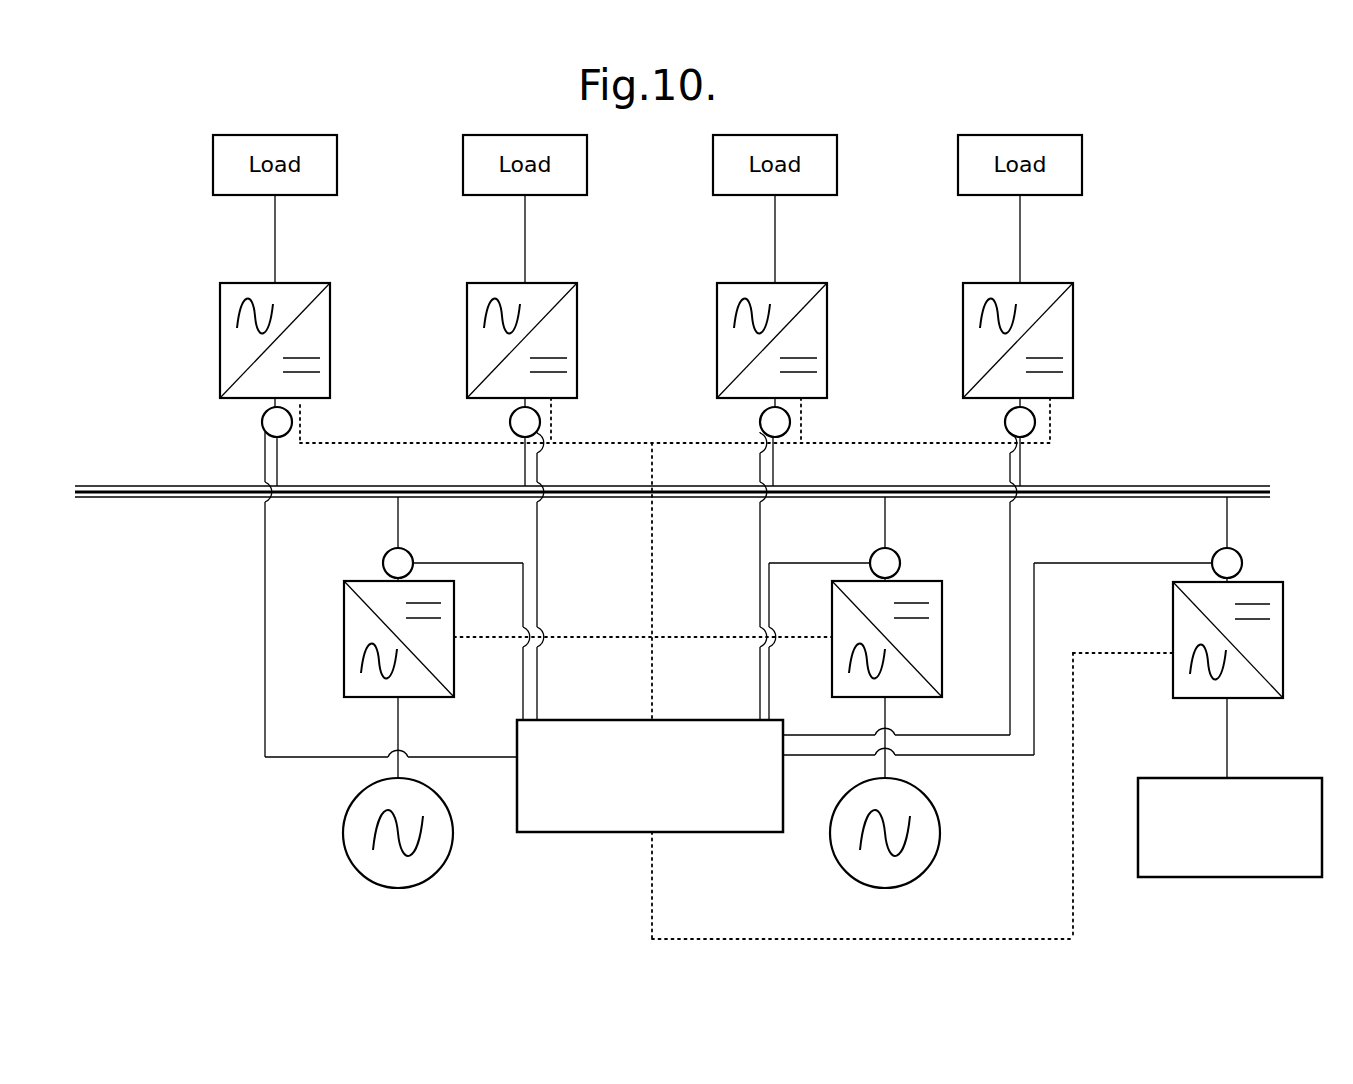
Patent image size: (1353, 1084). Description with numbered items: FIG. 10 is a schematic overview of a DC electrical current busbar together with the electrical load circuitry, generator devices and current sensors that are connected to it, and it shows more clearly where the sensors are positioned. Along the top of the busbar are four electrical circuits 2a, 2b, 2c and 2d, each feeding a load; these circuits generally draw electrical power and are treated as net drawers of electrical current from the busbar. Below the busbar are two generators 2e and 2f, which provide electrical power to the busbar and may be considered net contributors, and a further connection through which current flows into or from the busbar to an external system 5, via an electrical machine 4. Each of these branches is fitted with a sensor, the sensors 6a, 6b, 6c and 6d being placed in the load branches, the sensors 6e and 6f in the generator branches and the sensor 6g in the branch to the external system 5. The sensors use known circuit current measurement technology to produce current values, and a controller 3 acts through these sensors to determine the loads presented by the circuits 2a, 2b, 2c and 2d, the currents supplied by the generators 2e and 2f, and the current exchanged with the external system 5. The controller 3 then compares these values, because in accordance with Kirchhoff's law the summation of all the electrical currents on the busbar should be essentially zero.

The electrical circuit 2a is at (320, 330).
The electrical circuit 2b is at (568, 330).
The electrical circuit 2c is at (818, 334).
The electrical circuit 2d is at (1063, 337).
The generator 2e is at (445, 648).
The generator 2f is at (924, 647).
The controller 3 is at (717, 728).
The electrical machine 4 is at (1275, 652).
The external system 5 is at (1163, 782).
The sensor 6a is at (262, 421).
The sensor 6b is at (510, 420).
The sensor 6c is at (760, 420).
The sensor 6d is at (1005, 420).
The sensor 6e is at (383, 556).
The sensor 6f is at (900, 557).
The sensor 6g is at (1243, 557).